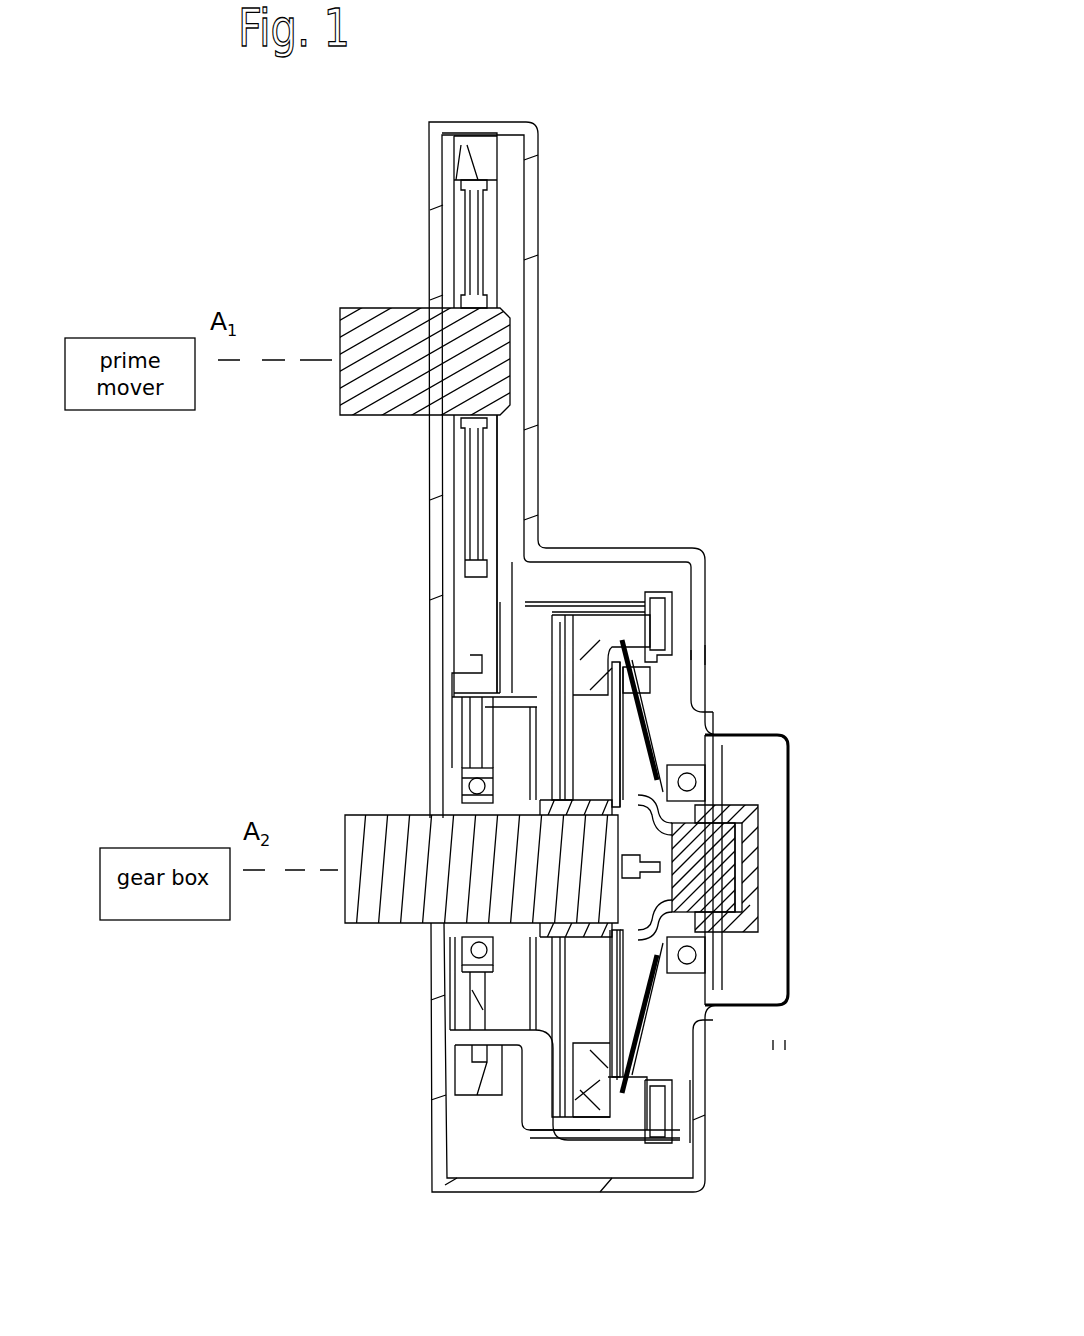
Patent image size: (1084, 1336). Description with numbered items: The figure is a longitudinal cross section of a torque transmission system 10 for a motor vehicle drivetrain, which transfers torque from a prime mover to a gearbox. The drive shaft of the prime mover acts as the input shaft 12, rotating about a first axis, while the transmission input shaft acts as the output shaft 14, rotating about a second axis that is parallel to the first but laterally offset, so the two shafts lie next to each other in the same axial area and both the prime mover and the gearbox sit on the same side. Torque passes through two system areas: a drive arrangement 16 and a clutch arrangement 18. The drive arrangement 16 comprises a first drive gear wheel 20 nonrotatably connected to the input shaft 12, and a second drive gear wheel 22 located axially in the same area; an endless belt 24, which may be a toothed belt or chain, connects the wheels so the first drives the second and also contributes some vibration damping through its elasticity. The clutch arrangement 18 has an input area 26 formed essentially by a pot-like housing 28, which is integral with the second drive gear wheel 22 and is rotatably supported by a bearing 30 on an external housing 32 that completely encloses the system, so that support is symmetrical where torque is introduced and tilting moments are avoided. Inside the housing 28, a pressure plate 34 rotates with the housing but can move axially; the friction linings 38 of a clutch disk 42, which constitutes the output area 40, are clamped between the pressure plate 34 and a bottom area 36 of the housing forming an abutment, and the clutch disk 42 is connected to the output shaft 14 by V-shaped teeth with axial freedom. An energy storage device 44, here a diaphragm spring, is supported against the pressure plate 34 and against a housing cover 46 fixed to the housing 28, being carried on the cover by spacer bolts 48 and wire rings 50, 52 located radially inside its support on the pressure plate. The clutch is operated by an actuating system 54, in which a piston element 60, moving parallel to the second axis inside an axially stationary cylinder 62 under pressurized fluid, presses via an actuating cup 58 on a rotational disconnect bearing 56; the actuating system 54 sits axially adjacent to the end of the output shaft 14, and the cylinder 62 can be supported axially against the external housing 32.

The torque transmission system 10 is at (710, 126).
The input shaft 12 is at (346, 306).
The output shaft 14 is at (360, 924).
The drive arrangement 16 is at (505, 437).
The clutch arrangement 18 is at (607, 592).
The first drive gear wheel 20 is at (482, 246).
The second drive gear wheel 22 is at (470, 695).
The endless belt 24 is at (520, 512).
The input area 26 is at (493, 1137).
The pot-like housing 28 is at (590, 1138).
The bearing 30 is at (458, 955).
The external housing 32 is at (708, 655).
The pressure plate 34 is at (612, 1120).
The bottom area 36 is at (520, 1095).
The friction linings 38 is at (600, 1140).
The output area 40 is at (520, 778).
The clutch disk 42 is at (718, 1015).
The energy storage device 44 is at (780, 1045).
The housing cover 46 is at (682, 725).
The spacer bolts 48 is at (650, 672).
The wire ring 50 is at (580, 693).
The wire ring 52 is at (600, 665).
The actuating system 54 is at (770, 803).
The rotational disconnect bearing 56 is at (676, 770).
The actuating cup 58 is at (635, 840).
The piston element 60 is at (722, 855).
The cylinder 62 is at (740, 912).